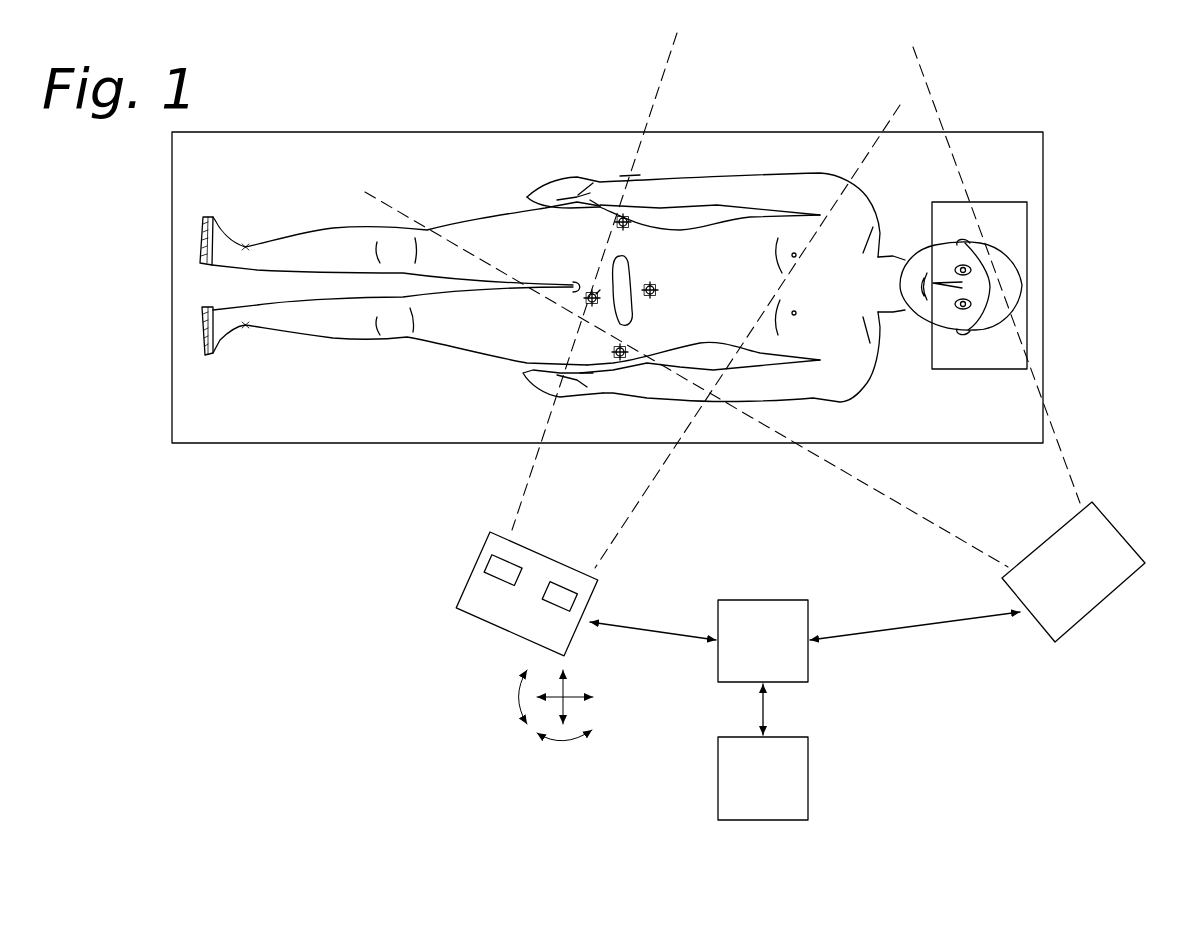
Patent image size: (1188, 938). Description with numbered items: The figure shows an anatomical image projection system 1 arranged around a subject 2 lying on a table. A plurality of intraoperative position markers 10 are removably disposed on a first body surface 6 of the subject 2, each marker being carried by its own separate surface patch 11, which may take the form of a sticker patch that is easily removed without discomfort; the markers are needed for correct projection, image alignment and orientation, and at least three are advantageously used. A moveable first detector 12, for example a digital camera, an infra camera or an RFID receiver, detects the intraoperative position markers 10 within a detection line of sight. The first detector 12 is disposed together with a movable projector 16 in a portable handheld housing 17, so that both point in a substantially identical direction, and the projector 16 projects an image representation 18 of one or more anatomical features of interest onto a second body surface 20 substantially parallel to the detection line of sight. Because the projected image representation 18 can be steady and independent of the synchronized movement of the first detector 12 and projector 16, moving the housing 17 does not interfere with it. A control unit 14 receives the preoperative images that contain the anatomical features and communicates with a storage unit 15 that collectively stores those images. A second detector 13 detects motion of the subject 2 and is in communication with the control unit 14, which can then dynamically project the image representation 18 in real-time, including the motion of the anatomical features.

The anatomical image projection system 1 is at (663, 723).
The subject 2 is at (1007, 285).
The first body surface 6 is at (593, 232).
The intraoperative position marker 10 is at (593, 295).
The surface patch 11 is at (600, 290).
The first detector 12 is at (497, 568).
The second detector 13 is at (1100, 550).
The control unit 14 is at (763, 613).
The storage unit 15 is at (783, 780).
The projector 16 is at (573, 600).
The portable handheld housing 17 is at (485, 615).
The image representation 18 is at (628, 354).
The second body surface 20 is at (632, 167).